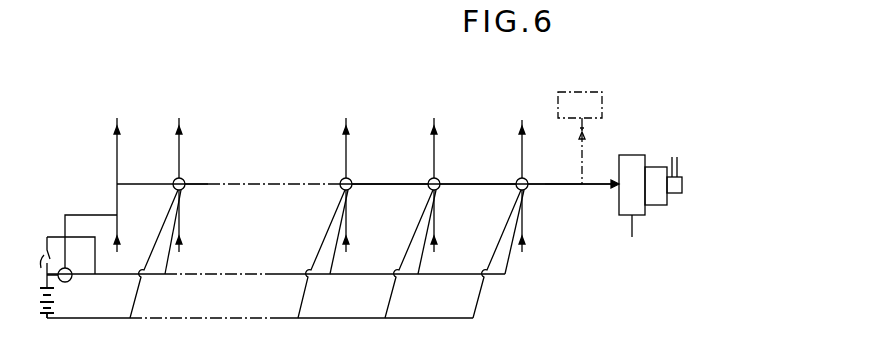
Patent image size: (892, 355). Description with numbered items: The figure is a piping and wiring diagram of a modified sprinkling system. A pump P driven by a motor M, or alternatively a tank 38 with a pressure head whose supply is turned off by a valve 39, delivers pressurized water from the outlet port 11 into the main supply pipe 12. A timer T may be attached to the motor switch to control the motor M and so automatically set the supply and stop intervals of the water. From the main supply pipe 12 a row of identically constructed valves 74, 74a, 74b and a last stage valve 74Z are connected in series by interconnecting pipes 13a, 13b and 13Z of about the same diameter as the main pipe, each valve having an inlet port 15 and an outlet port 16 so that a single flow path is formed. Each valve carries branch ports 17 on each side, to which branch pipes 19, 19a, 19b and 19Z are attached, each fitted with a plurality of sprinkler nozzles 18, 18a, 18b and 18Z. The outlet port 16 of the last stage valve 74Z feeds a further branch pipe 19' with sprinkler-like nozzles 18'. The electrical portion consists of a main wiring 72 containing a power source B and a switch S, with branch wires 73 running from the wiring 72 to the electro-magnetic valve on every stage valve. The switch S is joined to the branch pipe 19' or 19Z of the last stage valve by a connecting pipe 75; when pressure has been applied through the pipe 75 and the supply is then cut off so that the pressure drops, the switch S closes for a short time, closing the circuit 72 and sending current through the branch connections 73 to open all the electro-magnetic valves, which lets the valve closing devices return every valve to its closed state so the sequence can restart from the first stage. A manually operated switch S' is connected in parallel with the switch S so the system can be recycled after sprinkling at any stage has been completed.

The outlet port 11 is at (616, 182).
The main supply pipe 12 is at (562, 188).
The interconnecting pipe 13Z is at (193, 189).
The interconnecting pipe 13b is at (373, 188).
The interconnecting pipe 13a is at (460, 188).
The inlet port 15 is at (527, 191).
The outlet port 16 is at (174, 190).
The branch port 17 is at (515, 183).
The sprinkler nozzle 18 is at (538, 183).
The sprinkler nozzle 18' is at (135, 144).
The sprinkler nozzle 18Z is at (184, 131).
The sprinkler nozzle 18b is at (350, 131).
The sprinkler nozzle 18a is at (439, 131).
The branch pipe 19 is at (538, 191).
The branch pipe 19' is at (135, 207).
The branch pipe 19Z is at (182, 152).
The branch pipe 19b is at (348, 152).
The branch pipe 19a is at (437, 152).
The tank 38 is at (599, 103).
The valve 39 is at (586, 134).
The main wiring 72 is at (360, 276).
The branch wire 73 is at (152, 258).
The valve 74 is at (529, 181).
The last stage valve 74Z is at (186, 181).
The valve 74b is at (353, 181).
The valve 74a is at (441, 181).
The connecting pipe 75 is at (87, 214).
The power source B is at (54, 300).
The switch S is at (71, 259).
The manually operated switch S' is at (31, 265).
The pump P is at (632, 196).
The motor M is at (656, 186).
The timer T is at (682, 187).